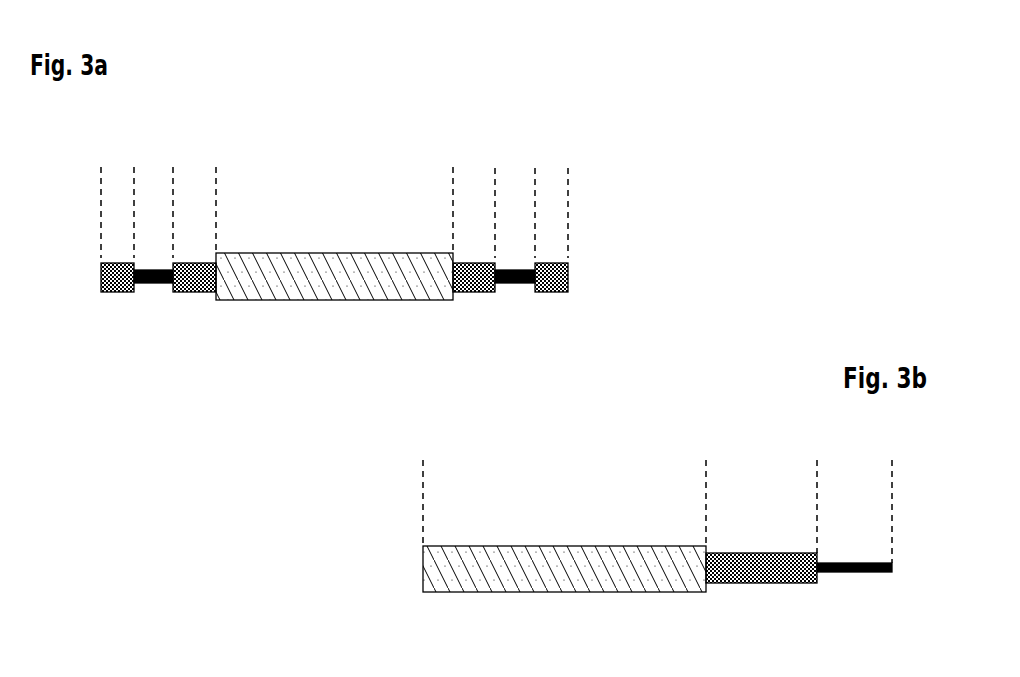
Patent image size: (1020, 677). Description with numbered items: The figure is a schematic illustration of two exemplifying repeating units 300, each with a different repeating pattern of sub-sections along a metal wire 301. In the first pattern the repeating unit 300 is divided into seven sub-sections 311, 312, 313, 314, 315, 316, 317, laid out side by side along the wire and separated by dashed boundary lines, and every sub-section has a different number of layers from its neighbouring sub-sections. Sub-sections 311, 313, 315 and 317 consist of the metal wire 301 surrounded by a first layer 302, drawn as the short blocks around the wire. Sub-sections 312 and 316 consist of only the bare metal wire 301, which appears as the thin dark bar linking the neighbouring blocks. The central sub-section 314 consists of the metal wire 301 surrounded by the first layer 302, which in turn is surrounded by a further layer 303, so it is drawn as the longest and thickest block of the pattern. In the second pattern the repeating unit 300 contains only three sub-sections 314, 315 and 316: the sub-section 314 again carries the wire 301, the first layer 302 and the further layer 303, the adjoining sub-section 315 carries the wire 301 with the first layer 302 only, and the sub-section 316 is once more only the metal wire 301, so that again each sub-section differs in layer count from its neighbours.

In FIG. 3A, the repeating unit 300 is at (772, 188).
In FIG. 3A, the metal wire 301 is at (175, 281).
In FIG. 3B, the metal wire 301 is at (853, 572).
In FIG. 3A, the first layer 302 is at (128, 283).
In FIG. 3B, the first layer 302 is at (762, 575).
In FIG. 3A, the further layer 303 is at (403, 270).
In FIG. 3B, the further layer 303 is at (548, 565).
In FIG. 3A, the sub-section 311 is at (117, 197).
In FIG. 3A, the sub-section 312 is at (154, 212).
In FIG. 3A, the sub-section 313 is at (196, 189).
In FIG. 3A, the sub-section 314 is at (388, 198).
In FIG. 3B, the sub-section 314 is at (564, 503).
In FIG. 3A, the sub-section 315 is at (477, 197).
In FIG. 3B, the sub-section 315 is at (778, 506).
In FIG. 3A, the sub-section 316 is at (517, 210).
In FIG. 3B, the sub-section 316 is at (865, 511).
In FIG. 3A, the sub-section 317 is at (552, 199).